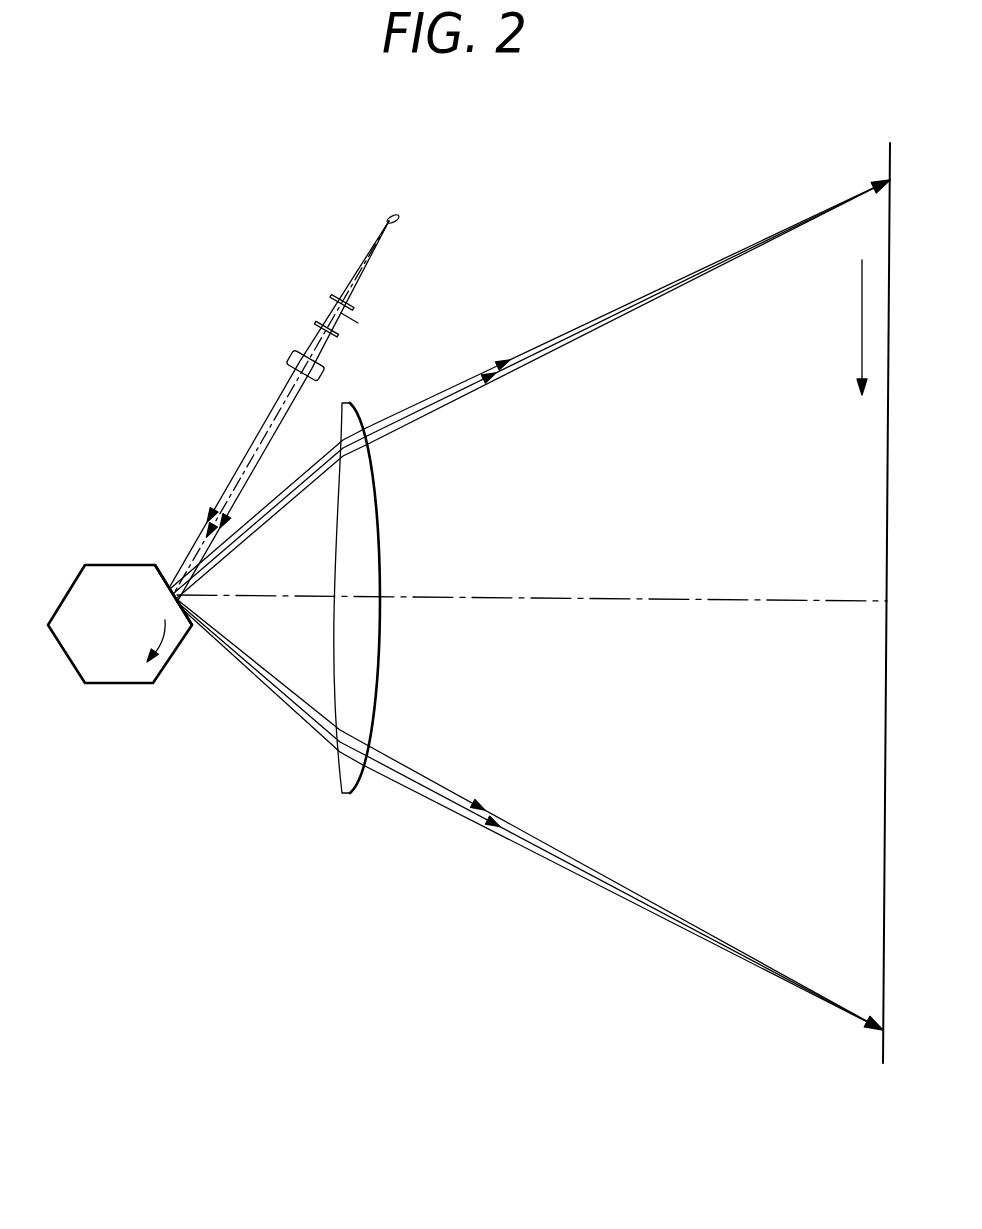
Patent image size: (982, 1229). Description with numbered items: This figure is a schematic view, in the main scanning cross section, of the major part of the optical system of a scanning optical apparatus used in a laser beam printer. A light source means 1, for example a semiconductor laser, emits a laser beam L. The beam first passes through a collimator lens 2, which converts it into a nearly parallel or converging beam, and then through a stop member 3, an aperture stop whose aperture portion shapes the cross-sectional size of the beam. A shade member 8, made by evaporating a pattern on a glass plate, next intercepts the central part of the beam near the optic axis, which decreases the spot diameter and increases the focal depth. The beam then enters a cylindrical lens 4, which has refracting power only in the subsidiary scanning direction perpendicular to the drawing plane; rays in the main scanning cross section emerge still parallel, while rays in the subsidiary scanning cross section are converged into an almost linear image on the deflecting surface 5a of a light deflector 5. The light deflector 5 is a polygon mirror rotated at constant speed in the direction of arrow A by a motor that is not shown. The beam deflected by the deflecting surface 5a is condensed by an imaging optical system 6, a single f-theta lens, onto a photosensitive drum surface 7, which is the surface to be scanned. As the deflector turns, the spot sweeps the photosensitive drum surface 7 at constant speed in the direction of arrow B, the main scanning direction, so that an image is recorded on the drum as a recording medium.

The light source means 1 is at (398, 215).
The laser beam L is at (364, 268).
The collimator lens 2 is at (333, 296).
The stop member 3 is at (327, 302).
The shade member 8 is at (316, 325).
The cylindrical lens 4 is at (290, 365).
The light deflector 5 is at (117, 565).
The deflecting surface 5a is at (203, 606).
The direction of rotation A is at (175, 658).
The imaging optical system 6 is at (351, 403).
The photosensitive drum surface 7 is at (888, 240).
The main scanning direction B is at (860, 330).